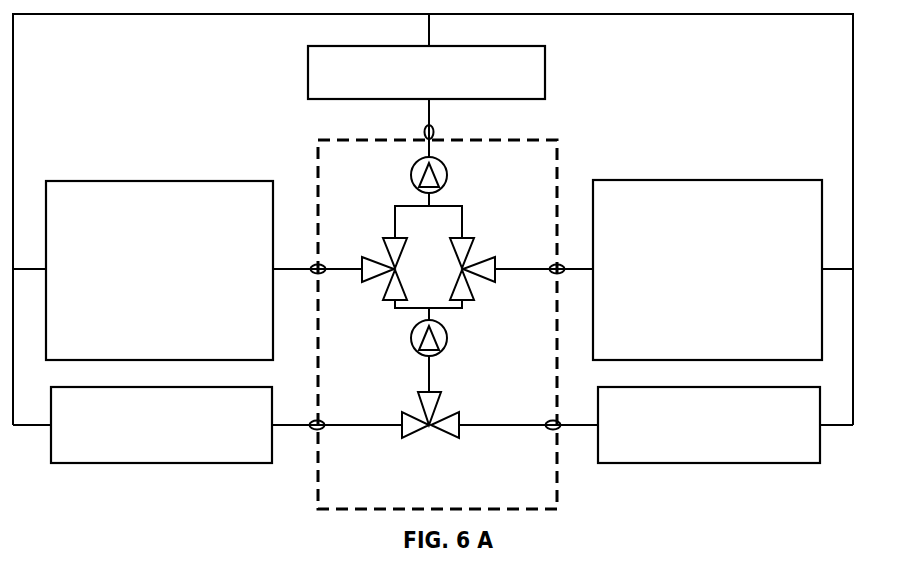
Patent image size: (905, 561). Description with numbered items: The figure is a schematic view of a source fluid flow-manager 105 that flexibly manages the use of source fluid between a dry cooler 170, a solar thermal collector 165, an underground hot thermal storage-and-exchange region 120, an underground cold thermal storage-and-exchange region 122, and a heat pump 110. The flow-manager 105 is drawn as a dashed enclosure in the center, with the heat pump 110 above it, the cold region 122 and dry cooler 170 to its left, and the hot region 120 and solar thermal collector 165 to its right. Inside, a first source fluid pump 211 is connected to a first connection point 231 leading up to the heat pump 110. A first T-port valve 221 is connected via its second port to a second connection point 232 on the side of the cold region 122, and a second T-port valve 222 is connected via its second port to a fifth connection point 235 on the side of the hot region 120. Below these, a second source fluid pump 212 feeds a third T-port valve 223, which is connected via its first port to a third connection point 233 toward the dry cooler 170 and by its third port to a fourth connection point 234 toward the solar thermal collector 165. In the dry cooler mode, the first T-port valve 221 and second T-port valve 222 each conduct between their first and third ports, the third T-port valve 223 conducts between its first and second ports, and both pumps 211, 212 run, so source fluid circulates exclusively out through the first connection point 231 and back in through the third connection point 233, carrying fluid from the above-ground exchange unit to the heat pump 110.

The heat pump 110 is at (426, 72).
The underground cold thermal storage-and-exchange region 122 is at (159, 270).
The underground hot thermal storage-and-exchange region 120 is at (707, 270).
The dry cooler 170 is at (161, 425).
The solar thermal collector 165 is at (709, 425).
The source fluid flow-manager 105 is at (437, 324).
The first source fluid pump 211 is at (448, 171).
The second source fluid pump 212 is at (448, 346).
The first T-port valve 221 is at (389, 262).
The second T-port valve 222 is at (470, 260).
The third T-port valve 223 is at (412, 410).
The first connection point 231 is at (422, 129).
The second connection point 232 is at (313, 264).
The third connection point 233 is at (313, 432).
The fourth connection point 234 is at (558, 432).
The fifth connection point 235 is at (559, 262).